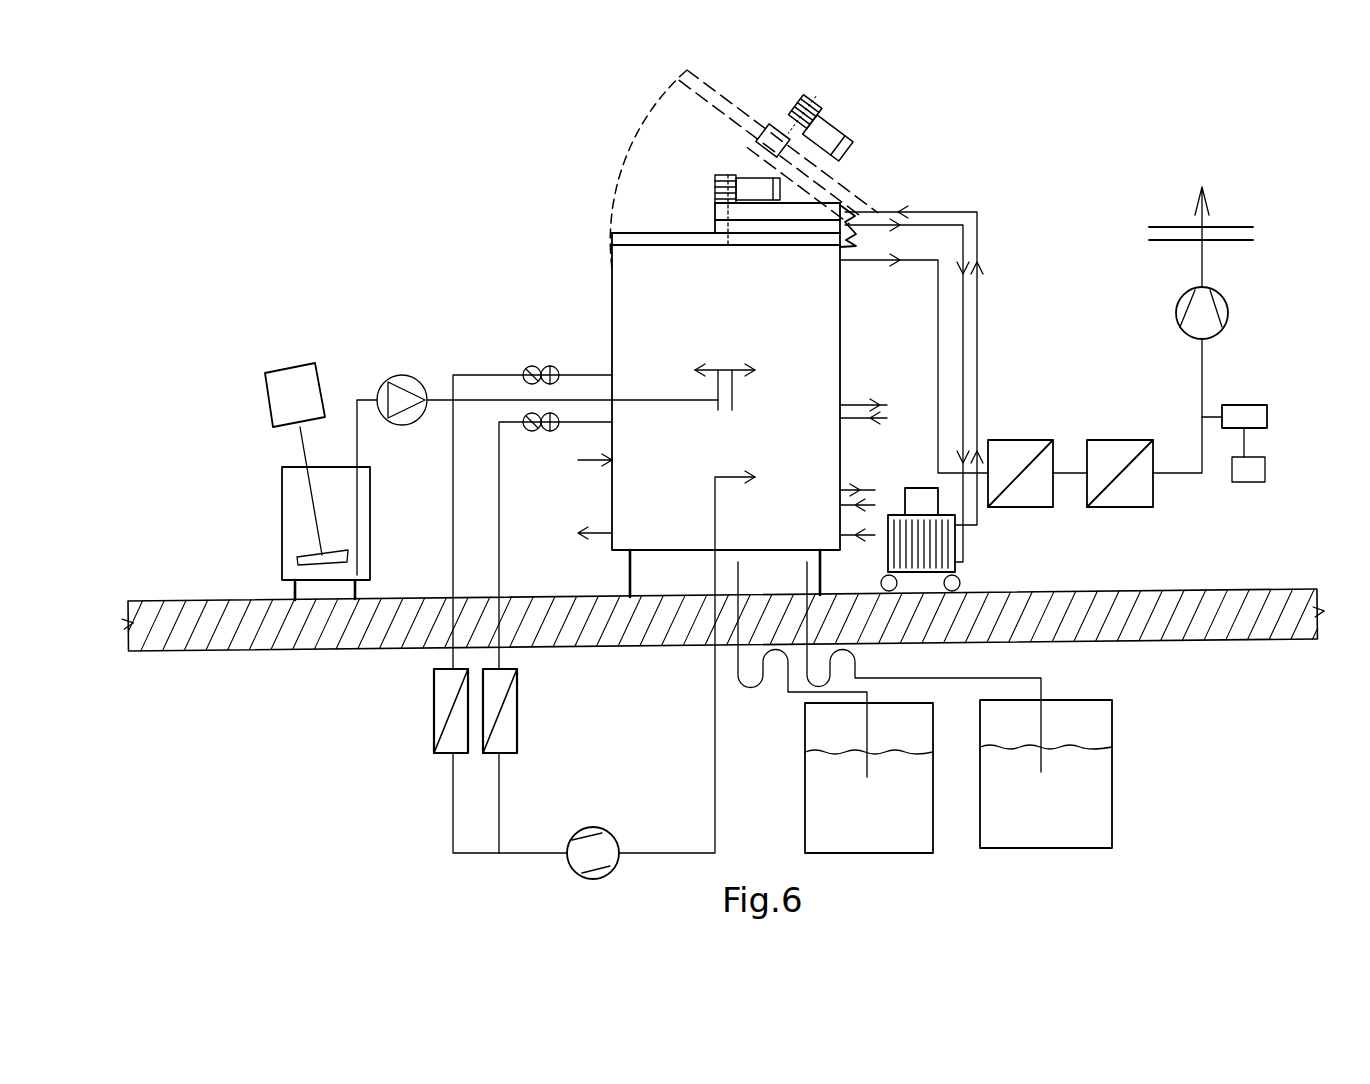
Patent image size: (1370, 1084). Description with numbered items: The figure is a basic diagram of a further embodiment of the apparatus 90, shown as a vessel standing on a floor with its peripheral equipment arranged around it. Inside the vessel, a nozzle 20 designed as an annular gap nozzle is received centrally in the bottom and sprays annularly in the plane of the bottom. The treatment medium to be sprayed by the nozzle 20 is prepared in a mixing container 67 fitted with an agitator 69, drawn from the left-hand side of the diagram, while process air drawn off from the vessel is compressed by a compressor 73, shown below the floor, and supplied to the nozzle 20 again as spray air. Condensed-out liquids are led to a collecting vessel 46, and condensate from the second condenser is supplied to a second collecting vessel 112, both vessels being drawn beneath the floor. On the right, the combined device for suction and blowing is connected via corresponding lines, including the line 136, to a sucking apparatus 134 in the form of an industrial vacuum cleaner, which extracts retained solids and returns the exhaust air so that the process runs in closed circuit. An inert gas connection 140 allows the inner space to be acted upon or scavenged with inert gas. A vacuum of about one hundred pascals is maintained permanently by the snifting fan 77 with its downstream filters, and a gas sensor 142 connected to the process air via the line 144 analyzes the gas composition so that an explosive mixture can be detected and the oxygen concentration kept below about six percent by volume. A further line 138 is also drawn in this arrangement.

The apparatus 90 is at (893, 160).
The nozzle 20 is at (728, 368).
The return line 138 is at (978, 243).
The line 136 is at (935, 224).
The line 144 is at (862, 262).
The sucking apparatus 134 is at (933, 555).
The inert gas connection 140 is at (840, 535).
The fan 77 is at (1225, 302).
The gas sensor 142 is at (1247, 417).
The agitator 69 is at (300, 378).
The mixing container 67 is at (298, 520).
The compressor 73 is at (583, 879).
The second collecting vessel 112 is at (867, 830).
The collecting vessel 46 is at (1082, 808).